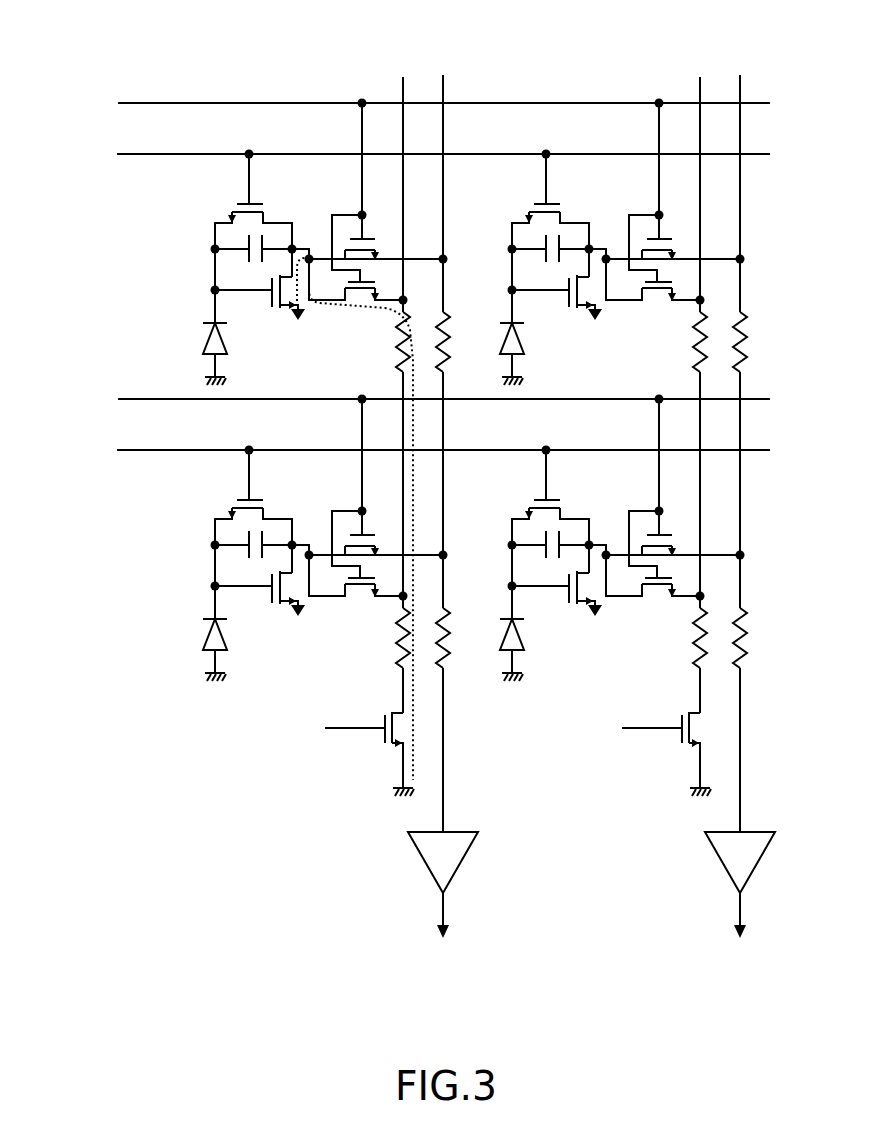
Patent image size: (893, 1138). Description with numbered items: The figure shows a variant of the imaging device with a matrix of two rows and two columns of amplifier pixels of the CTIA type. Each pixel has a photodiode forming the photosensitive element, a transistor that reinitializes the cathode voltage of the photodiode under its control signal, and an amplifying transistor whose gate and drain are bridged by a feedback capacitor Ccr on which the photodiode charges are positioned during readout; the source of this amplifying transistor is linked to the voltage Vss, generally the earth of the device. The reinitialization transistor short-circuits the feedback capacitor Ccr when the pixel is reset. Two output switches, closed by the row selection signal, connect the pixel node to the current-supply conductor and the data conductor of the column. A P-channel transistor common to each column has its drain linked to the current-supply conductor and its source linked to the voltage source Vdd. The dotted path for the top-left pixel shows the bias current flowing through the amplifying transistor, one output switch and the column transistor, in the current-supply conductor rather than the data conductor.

The feedback capacitor Ccr is at (411, 406).
The voltage Vss is at (449, 479).
The voltage source Vdd is at (529, 791).